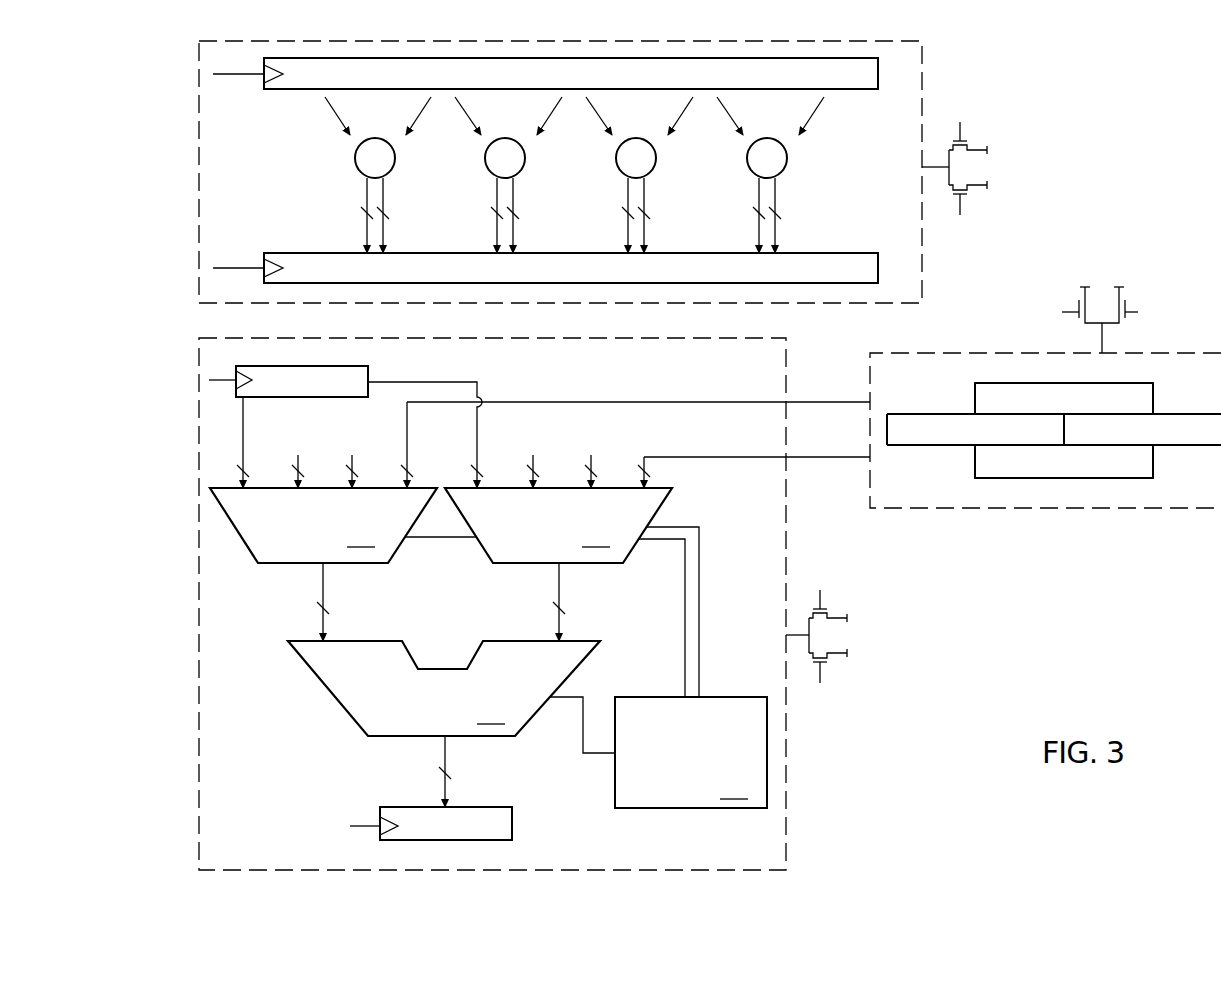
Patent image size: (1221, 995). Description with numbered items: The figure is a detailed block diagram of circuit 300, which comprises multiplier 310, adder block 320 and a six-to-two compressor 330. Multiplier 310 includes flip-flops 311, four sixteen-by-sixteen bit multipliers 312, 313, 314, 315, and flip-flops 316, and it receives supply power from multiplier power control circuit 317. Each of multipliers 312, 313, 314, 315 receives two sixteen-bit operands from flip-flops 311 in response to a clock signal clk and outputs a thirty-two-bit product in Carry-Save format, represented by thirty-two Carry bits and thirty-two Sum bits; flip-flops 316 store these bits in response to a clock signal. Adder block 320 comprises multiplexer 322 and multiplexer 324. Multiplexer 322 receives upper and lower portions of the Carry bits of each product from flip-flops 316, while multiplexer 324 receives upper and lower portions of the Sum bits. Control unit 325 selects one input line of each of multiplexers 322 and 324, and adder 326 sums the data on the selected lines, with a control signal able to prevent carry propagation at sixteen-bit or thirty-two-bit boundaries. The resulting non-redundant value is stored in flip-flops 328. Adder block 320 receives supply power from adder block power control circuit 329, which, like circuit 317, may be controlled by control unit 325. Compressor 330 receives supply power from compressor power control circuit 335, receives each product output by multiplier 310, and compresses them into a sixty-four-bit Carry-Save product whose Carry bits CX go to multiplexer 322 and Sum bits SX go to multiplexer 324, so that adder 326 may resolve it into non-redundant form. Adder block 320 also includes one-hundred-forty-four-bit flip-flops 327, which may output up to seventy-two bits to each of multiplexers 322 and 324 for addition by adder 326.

The circuit 300 is at (1131, 130).
The multiplier 310 is at (922, 296).
The flip-flops 311 is at (878, 89).
The 16×16 bit multiplier 312 is at (395, 166).
The 16×16 bit multiplier 313 is at (525, 166).
The 16×16 bit multiplier 314 is at (656, 166).
The 16×16 bit multiplier 315 is at (787, 166).
The flip-flops 316 is at (843, 253).
The multiplier power control circuit 317 is at (1014, 124).
The adder block 320 is at (786, 797).
The multiplexer 322 is at (346, 521).
The multiplexer 324 is at (572, 556).
The control unit 325 is at (691, 752).
The adder 326 is at (451, 724).
The 144-bit flip-flops 327 is at (355, 366).
The flip-flops 328 is at (480, 807).
The adder block power control circuit 329 is at (871, 589).
The 6:2 compressor 330 is at (1050, 508).
The compressor power control circuit 335 is at (1136, 257).